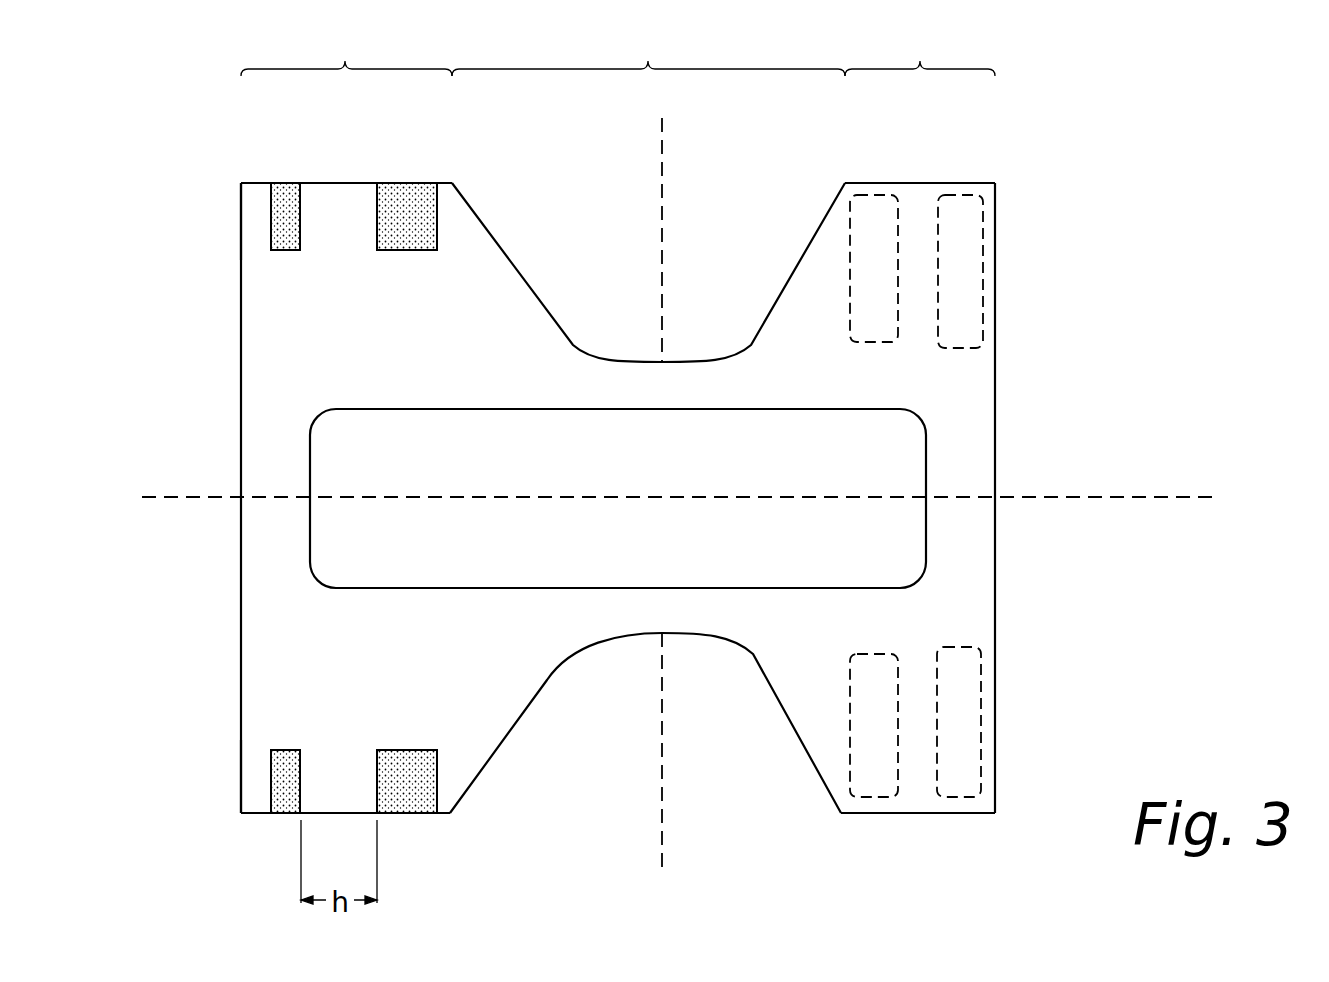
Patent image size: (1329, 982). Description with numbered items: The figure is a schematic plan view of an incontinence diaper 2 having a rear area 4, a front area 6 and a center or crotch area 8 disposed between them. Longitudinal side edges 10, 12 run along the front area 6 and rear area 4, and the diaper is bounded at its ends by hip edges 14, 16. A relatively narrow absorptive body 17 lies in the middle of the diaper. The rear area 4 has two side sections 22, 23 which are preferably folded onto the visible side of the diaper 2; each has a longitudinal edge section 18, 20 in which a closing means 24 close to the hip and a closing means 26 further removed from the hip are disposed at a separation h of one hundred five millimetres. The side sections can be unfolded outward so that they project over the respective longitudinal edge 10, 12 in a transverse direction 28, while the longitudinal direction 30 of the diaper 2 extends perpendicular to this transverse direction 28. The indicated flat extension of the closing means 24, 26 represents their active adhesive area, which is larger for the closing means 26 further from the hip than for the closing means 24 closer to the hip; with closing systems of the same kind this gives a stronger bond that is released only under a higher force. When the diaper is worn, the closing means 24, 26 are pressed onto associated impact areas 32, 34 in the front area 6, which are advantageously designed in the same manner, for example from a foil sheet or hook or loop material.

The incontinence diaper 2 is at (1018, 190).
The rear area 4 is at (346, 50).
The front area 6 is at (920, 48).
The center or crotch area 8 is at (648, 48).
The longitudinal side edge 10 is at (345, 183).
The longitudinal side edge 12 is at (348, 816).
The hip edge 14 is at (995, 363).
The hip edge 16 is at (242, 360).
The absorptive body 17 is at (487, 423).
The longitudinal edge section 18 is at (252, 213).
The longitudinal edge section 20 is at (252, 787).
The side section 22 is at (320, 305).
The side section 23 is at (360, 737).
The closing means close to the hip 24 is at (287, 198).
The closing means further removed from the hip 26 is at (408, 198).
The transverse direction 28 is at (662, 816).
The longitudinal direction 30 is at (1108, 495).
The impact area 32 is at (975, 268).
The impact area 34 is at (874, 205).